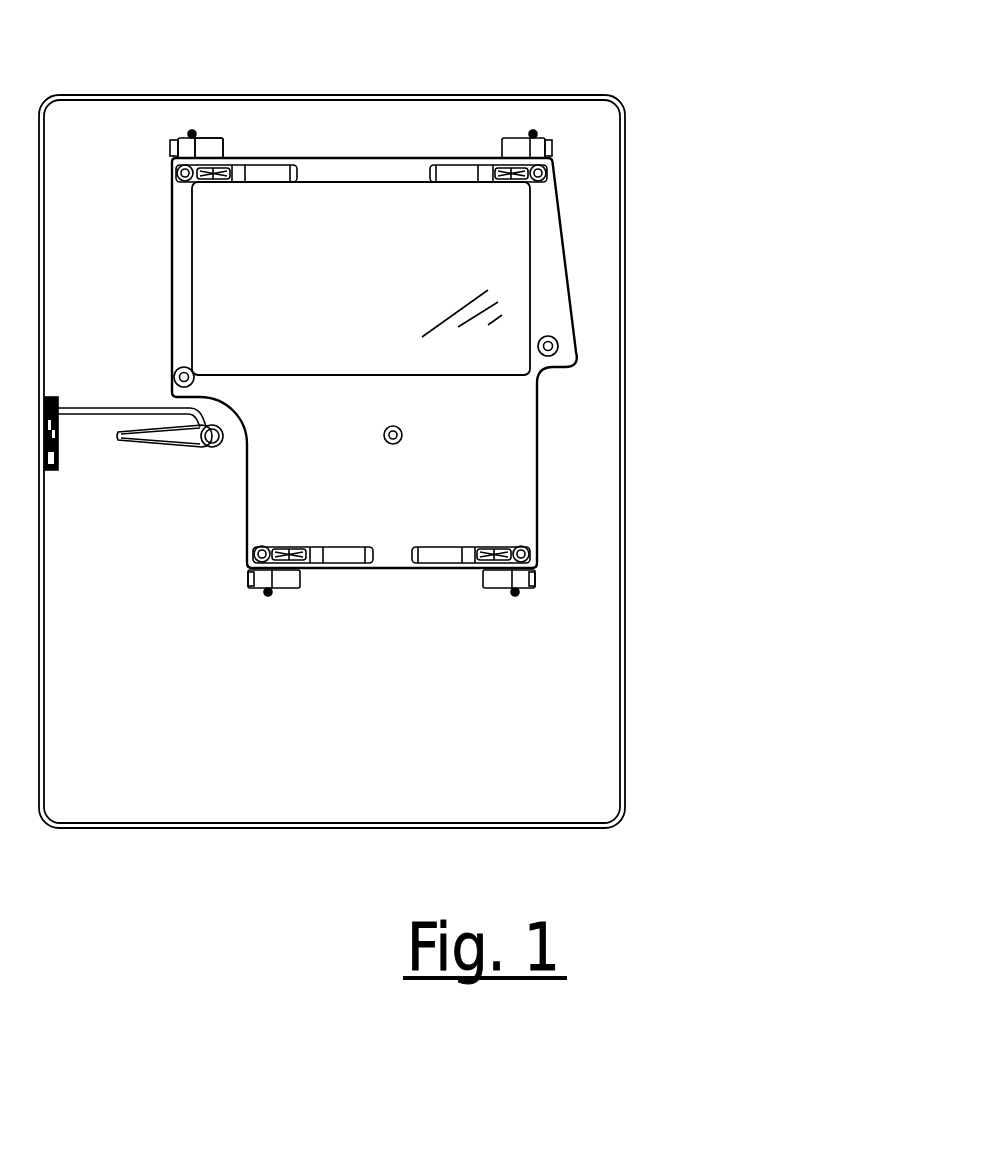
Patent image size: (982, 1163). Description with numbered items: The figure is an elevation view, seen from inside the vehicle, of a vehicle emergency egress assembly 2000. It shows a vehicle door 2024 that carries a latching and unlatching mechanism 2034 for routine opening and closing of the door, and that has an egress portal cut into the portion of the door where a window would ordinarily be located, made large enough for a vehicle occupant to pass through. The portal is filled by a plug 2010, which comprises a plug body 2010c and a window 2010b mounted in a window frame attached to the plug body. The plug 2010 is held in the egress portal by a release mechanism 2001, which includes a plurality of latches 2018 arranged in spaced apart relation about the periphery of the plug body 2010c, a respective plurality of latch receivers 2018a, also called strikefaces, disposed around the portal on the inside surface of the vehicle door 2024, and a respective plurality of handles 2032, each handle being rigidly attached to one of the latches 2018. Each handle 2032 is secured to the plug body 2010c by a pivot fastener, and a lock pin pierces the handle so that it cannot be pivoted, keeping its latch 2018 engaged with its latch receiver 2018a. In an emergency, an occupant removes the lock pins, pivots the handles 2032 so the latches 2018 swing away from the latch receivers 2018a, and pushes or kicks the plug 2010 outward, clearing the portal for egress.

The vehicle emergency egress assembly 2000 is at (684, 74).
The vehicle door 2024 is at (165, 695).
The plug 2010 is at (434, 624).
The window 2010b is at (304, 306).
The plug body 2010c is at (342, 479).
The release mechanism 2001 is at (519, 184).
The handle 2032 is at (257, 167).
The latch 2018 is at (164, 142).
The latch receiver 2018a is at (192, 137).
The latching and unlatching mechanism 2034 is at (92, 475).